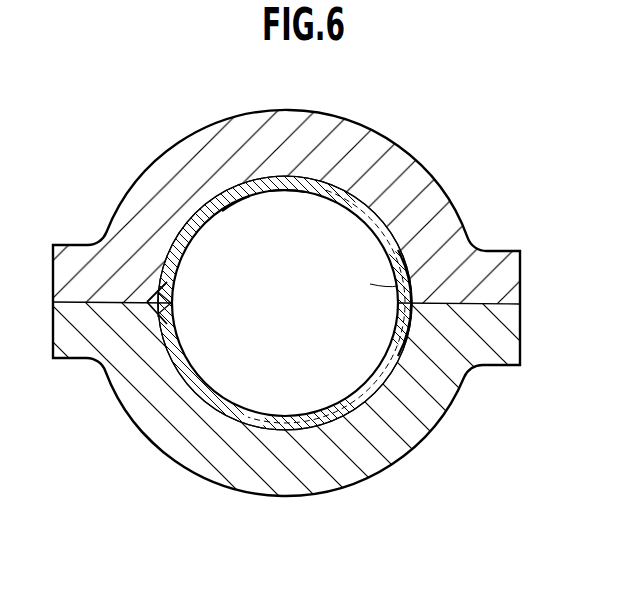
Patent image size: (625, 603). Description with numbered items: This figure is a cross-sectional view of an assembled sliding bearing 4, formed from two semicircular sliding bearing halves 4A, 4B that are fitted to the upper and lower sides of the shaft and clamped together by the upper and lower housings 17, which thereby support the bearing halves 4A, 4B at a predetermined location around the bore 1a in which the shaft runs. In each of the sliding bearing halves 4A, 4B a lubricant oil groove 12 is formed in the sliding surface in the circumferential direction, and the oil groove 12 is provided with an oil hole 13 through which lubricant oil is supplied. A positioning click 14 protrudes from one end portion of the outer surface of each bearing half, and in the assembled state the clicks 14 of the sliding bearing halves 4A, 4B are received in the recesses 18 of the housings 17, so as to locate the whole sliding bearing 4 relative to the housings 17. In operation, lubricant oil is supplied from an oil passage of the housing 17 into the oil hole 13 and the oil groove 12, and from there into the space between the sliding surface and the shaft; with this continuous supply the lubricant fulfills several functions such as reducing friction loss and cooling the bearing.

The shaft bore 1a is at (370, 231).
The sliding bearing 4 is at (258, 168).
The sliding bearing half 4A is at (350, 199).
The sliding bearing half 4B is at (397, 461).
The lubricant oil groove 12 is at (238, 199).
The oil hole 13 is at (287, 188).
The positioning click 14 is at (155, 312).
The housing 17 is at (188, 147).
The recess 18 is at (168, 295).